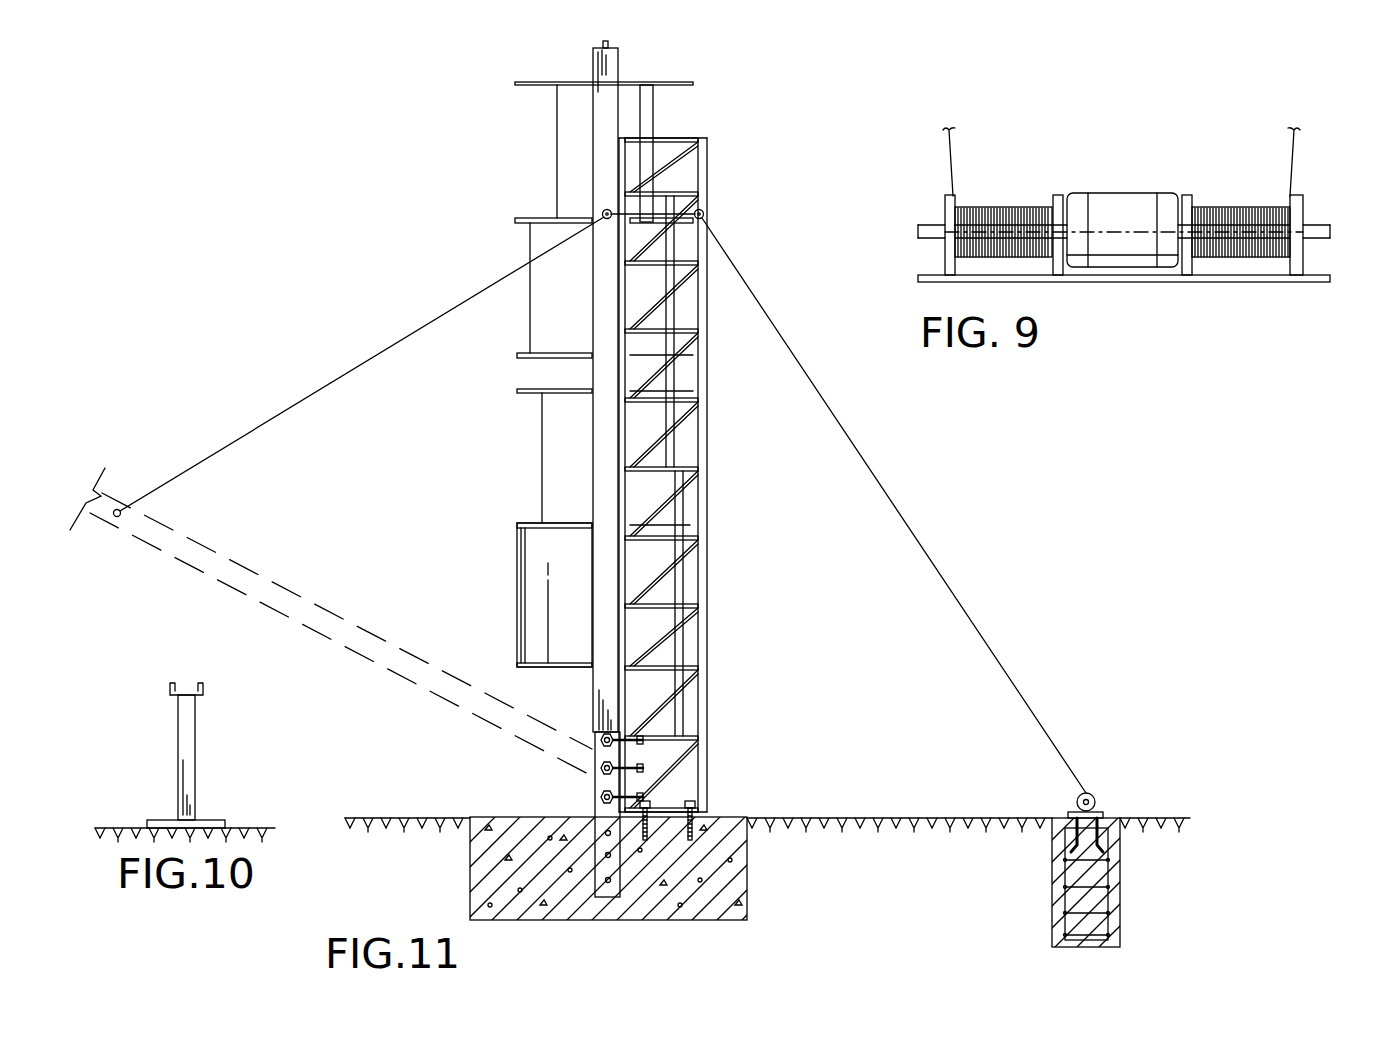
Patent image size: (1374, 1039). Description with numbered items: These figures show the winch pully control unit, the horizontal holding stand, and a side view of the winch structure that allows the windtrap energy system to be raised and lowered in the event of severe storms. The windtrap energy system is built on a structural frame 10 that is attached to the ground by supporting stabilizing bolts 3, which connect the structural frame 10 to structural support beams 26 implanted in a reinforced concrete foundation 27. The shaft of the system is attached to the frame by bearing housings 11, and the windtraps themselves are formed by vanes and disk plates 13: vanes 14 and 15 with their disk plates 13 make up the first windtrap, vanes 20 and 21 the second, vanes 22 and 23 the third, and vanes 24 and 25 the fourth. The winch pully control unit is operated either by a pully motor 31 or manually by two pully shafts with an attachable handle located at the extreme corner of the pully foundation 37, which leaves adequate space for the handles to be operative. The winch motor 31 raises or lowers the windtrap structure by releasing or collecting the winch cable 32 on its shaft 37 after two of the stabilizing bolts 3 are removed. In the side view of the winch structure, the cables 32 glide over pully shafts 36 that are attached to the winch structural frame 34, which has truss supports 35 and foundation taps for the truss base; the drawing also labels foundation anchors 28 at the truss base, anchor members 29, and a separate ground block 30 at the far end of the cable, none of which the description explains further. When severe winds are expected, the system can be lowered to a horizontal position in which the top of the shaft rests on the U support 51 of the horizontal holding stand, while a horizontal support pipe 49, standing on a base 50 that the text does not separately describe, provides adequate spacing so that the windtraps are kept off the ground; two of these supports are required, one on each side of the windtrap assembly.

In FIG. 11, the stabilizing bolts 3 is at (645, 736).
In FIG. 11, the structural frame 10 is at (590, 107).
In FIG. 11, the bearing housing 11 is at (610, 45).
In FIG. 11, the disk plates 13 is at (565, 82).
In FIG. 11, the vane 14 is at (653, 122).
In FIG. 11, the vane 15 is at (560, 145).
In FIG. 11, the vane 20 is at (670, 315).
In FIG. 11, the vane 21 is at (545, 305).
In FIG. 11, the vane 22 is at (683, 647).
In FIG. 11, the vane 23 is at (540, 567).
In FIG. 11, the vane 24 is at (650, 432).
In FIG. 11, the vane 25 is at (556, 445).
In FIG. 11, the structural support beams 26 is at (600, 832).
In FIG. 11, the reinforced concrete foundation 27 is at (485, 862).
In FIG. 11, the anchor bolts 28 is at (692, 842).
In FIG. 11, the anchor bolts 29 is at (1097, 848).
In FIG. 11, the concrete anchor block 30 is at (1060, 908).
In FIG. 9, the pully motor 31 is at (1140, 200).
In FIG. 11, the pully motor 31 is at (1093, 797).
In FIG. 9, the winch cable 32 is at (953, 160).
In FIG. 11, the winch cable 32 is at (943, 577).
In FIG. 11, the winch structural frame 34 is at (710, 503).
In FIG. 11, the truss supports 35 is at (688, 640).
In FIG. 11, the pully shaft 36 is at (603, 211).
In FIG. 9, the pully foundation 37 is at (1303, 208).
In FIG. 10, the horizontal support pipe 49 is at (197, 752).
In FIG. 10, the base plate 50 is at (165, 820).
In FIG. 10, the U support 51 is at (207, 688).